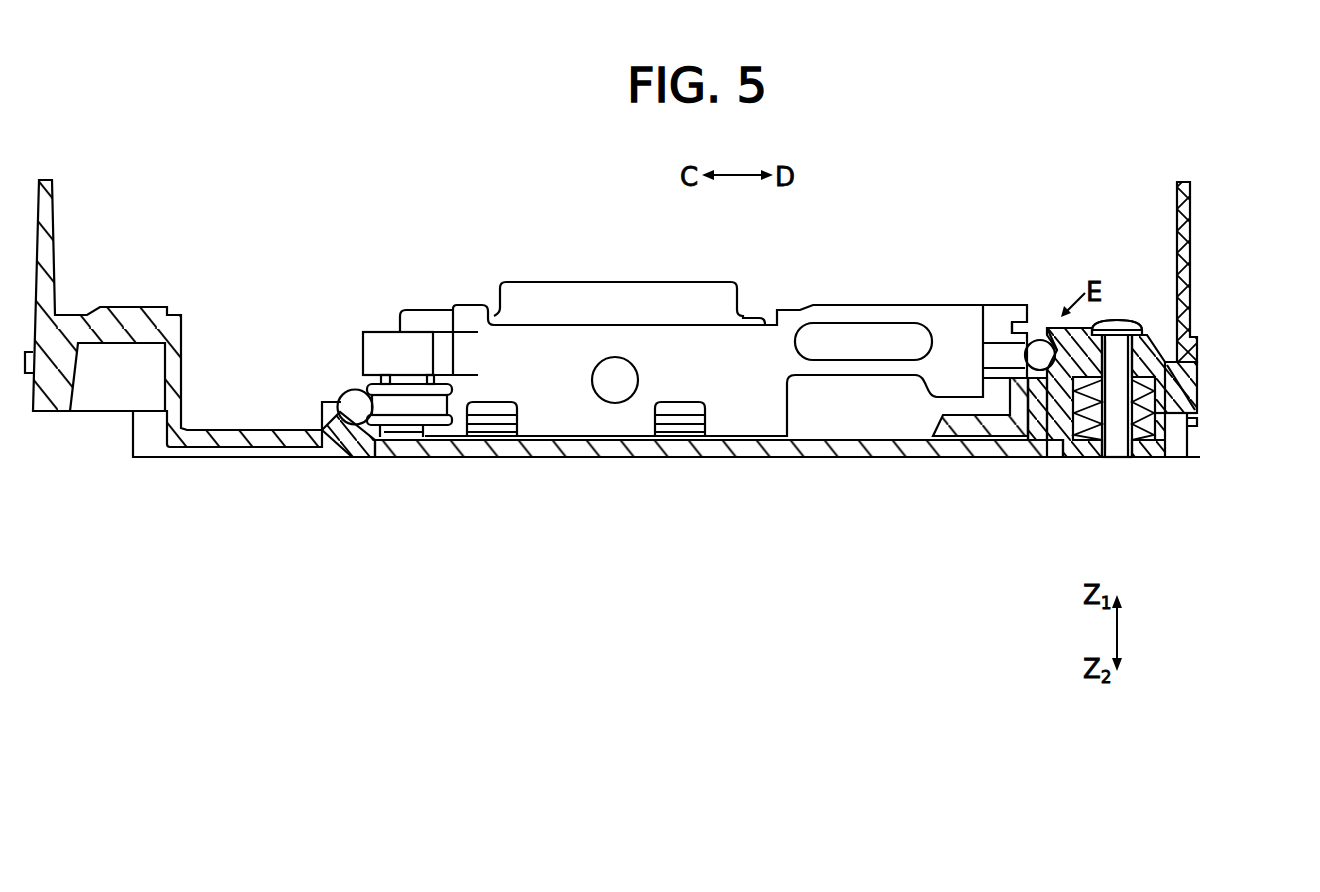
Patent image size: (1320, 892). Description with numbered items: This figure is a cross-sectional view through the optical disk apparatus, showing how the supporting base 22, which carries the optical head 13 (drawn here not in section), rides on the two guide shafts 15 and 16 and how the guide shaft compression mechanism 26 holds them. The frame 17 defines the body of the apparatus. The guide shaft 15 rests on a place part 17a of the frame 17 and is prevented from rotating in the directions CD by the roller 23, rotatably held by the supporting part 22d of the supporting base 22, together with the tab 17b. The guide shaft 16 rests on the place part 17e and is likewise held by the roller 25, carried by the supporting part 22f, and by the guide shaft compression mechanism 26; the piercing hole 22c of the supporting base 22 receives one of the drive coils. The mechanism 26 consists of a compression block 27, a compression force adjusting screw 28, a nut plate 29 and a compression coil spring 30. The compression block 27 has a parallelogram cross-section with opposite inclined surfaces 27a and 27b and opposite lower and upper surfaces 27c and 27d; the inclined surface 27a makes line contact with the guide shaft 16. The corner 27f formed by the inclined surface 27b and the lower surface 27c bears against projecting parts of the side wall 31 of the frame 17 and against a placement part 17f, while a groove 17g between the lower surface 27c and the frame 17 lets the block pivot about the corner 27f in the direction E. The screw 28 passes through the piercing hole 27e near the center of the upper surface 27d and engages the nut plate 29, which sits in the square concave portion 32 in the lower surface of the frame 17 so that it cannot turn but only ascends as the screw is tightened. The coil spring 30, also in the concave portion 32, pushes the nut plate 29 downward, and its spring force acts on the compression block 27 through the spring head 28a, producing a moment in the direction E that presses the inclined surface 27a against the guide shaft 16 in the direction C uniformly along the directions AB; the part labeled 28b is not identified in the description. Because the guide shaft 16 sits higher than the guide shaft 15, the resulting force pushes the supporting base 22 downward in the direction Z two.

The optical head 13 is at (655, 283).
The guide shaft 15 is at (348, 392).
The guide shaft 16 is at (1040, 338).
The frame 17 is at (795, 447).
The place part 17a is at (353, 421).
The tab 17b is at (320, 410).
The place part 17e is at (1040, 426).
The placement part 17f is at (1163, 363).
The groove 17g is at (1104, 318).
The supporting base 22 is at (803, 307).
The piercing hole 22c is at (893, 328).
The supporting part 22d is at (383, 347).
The supporting part 22f is at (1008, 318).
The roller 23 is at (388, 428).
The roller 25 is at (990, 447).
The guide shaft compression mechanism 26 is at (1128, 293).
The compression block 27 is at (1150, 334).
The inclined surface 27a is at (1073, 457).
The inclined surface 27b is at (1188, 337).
The lower surface 27c is at (1082, 458).
The upper surface 27d is at (1075, 328).
The piercing hole 27e is at (1117, 363).
The corner 27f is at (1160, 377).
The compression force adjusting screw 28 is at (1147, 323).
The spring head 28a is at (1137, 318).
The screw tip 28b is at (1152, 454).
The nut plate 29 is at (1150, 456).
The compression coil spring 30 is at (1150, 414).
The side wall 31 is at (1197, 334).
The concave portion 32 is at (1200, 409).